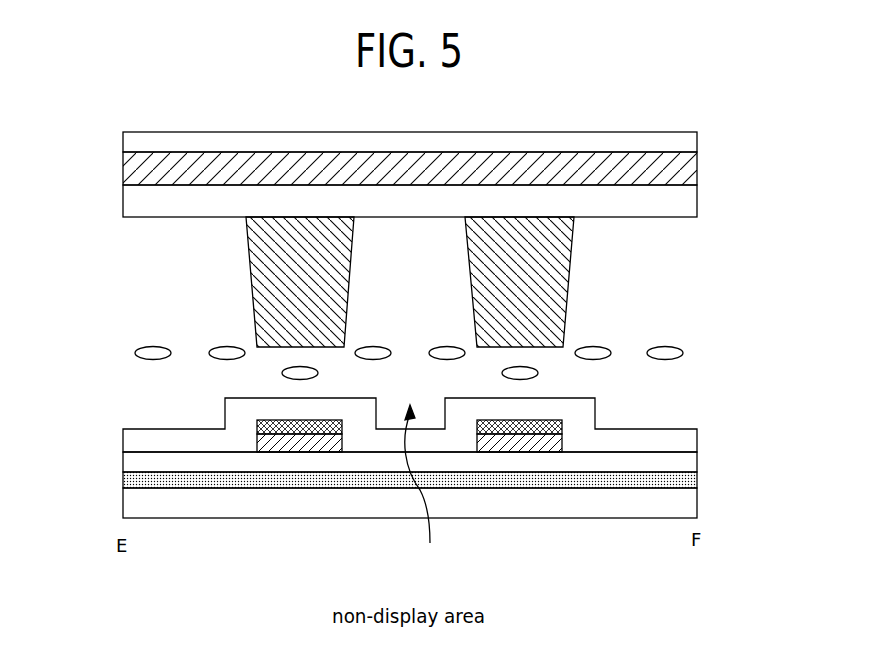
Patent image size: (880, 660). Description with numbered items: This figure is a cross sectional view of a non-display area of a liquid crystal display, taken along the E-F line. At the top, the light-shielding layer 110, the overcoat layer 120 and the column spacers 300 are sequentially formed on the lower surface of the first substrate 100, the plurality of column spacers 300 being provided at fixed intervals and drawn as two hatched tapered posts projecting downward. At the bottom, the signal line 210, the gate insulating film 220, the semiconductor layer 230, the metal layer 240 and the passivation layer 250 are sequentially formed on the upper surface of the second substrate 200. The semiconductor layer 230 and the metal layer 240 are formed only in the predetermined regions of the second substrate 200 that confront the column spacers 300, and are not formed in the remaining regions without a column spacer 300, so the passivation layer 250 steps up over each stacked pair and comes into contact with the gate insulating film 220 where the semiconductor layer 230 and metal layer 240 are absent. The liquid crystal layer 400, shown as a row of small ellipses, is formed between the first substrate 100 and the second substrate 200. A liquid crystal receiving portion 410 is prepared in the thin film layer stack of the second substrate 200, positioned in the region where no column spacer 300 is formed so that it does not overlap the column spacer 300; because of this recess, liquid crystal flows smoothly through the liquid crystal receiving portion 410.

The first substrate 100 is at (687, 141).
The light-shielding layer 110 is at (687, 168).
The overcoat layer 120 is at (687, 200).
The second substrate 200 is at (687, 512).
The signal line 210 is at (687, 485).
The gate insulating film 220 is at (687, 462).
The semiconductor layer 230 is at (276, 443).
The metal layer 240 is at (337, 443).
The passivation layer 250 is at (687, 441).
The column spacers 300 is at (561, 275).
The liquid crystal layer 400 is at (118, 352).
The liquid crystal receiving portion 410 is at (425, 485).